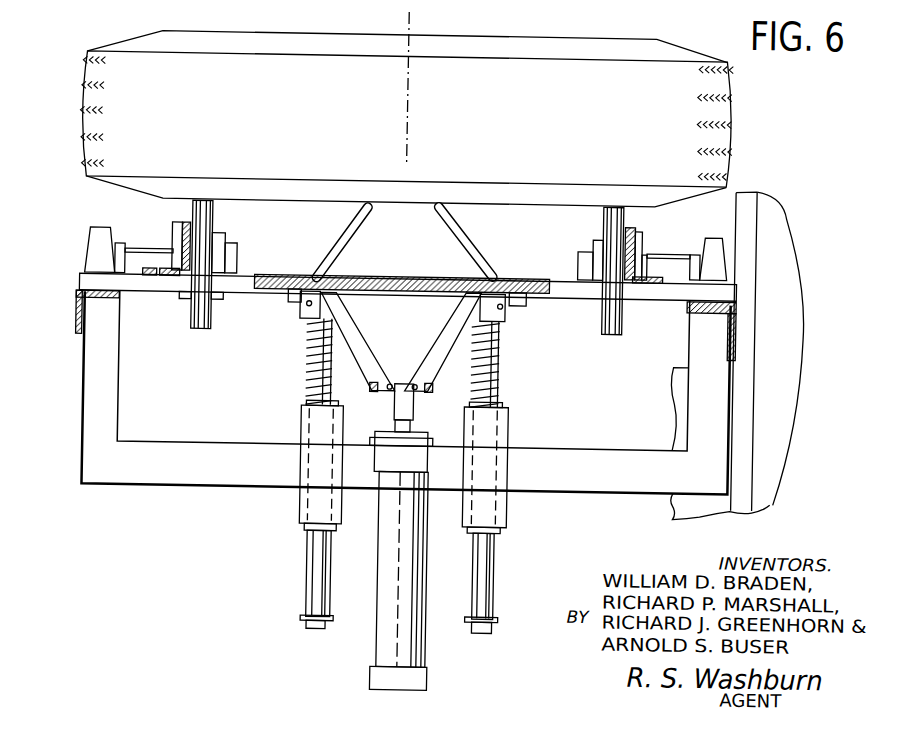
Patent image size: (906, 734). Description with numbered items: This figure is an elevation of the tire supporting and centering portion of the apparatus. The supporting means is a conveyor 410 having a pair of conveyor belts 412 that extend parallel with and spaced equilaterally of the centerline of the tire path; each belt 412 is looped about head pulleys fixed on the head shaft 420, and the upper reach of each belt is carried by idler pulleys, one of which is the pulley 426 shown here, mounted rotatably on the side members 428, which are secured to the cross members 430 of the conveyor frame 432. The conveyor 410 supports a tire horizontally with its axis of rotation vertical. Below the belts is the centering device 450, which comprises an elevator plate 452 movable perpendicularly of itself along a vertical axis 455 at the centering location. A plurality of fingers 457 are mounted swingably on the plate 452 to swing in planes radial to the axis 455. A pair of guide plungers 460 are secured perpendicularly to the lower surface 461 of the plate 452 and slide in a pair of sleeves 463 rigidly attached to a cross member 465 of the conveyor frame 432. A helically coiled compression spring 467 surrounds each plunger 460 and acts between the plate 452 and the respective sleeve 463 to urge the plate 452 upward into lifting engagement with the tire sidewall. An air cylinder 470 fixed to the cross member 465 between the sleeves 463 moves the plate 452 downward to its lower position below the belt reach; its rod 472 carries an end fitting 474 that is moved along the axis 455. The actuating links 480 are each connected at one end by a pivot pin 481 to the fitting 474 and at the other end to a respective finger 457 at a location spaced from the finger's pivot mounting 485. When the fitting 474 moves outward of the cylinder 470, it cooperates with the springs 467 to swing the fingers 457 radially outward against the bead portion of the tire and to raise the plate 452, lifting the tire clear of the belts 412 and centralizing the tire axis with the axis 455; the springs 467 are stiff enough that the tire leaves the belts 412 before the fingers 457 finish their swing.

The conveyor 410 is at (145, 210).
The conveyor belts 412 is at (202, 333).
The head shaft 420 is at (563, 243).
The roller 426 is at (210, 215).
The side members 428 is at (170, 243).
The cross members 430 is at (88, 288).
The conveyor frame 432 is at (76, 321).
The centering device 450 is at (519, 151).
The elevator plate 452 is at (417, 276).
The vertical axis 455 is at (403, 73).
The centering fingers 457 is at (440, 206).
The guide plungers 460 is at (306, 350).
The lower surface 461 is at (407, 291).
The sleeves 463 is at (302, 430).
The cross member 465 is at (185, 480).
The compression spring 467 is at (306, 384).
The air cylinder 470 is at (387, 643).
The rod 472 is at (412, 428).
The end fitting 474 is at (400, 382).
The actuating links 480 is at (365, 348).
The pivot pin 481 is at (392, 396).
The pivot mounting 485 is at (305, 309).